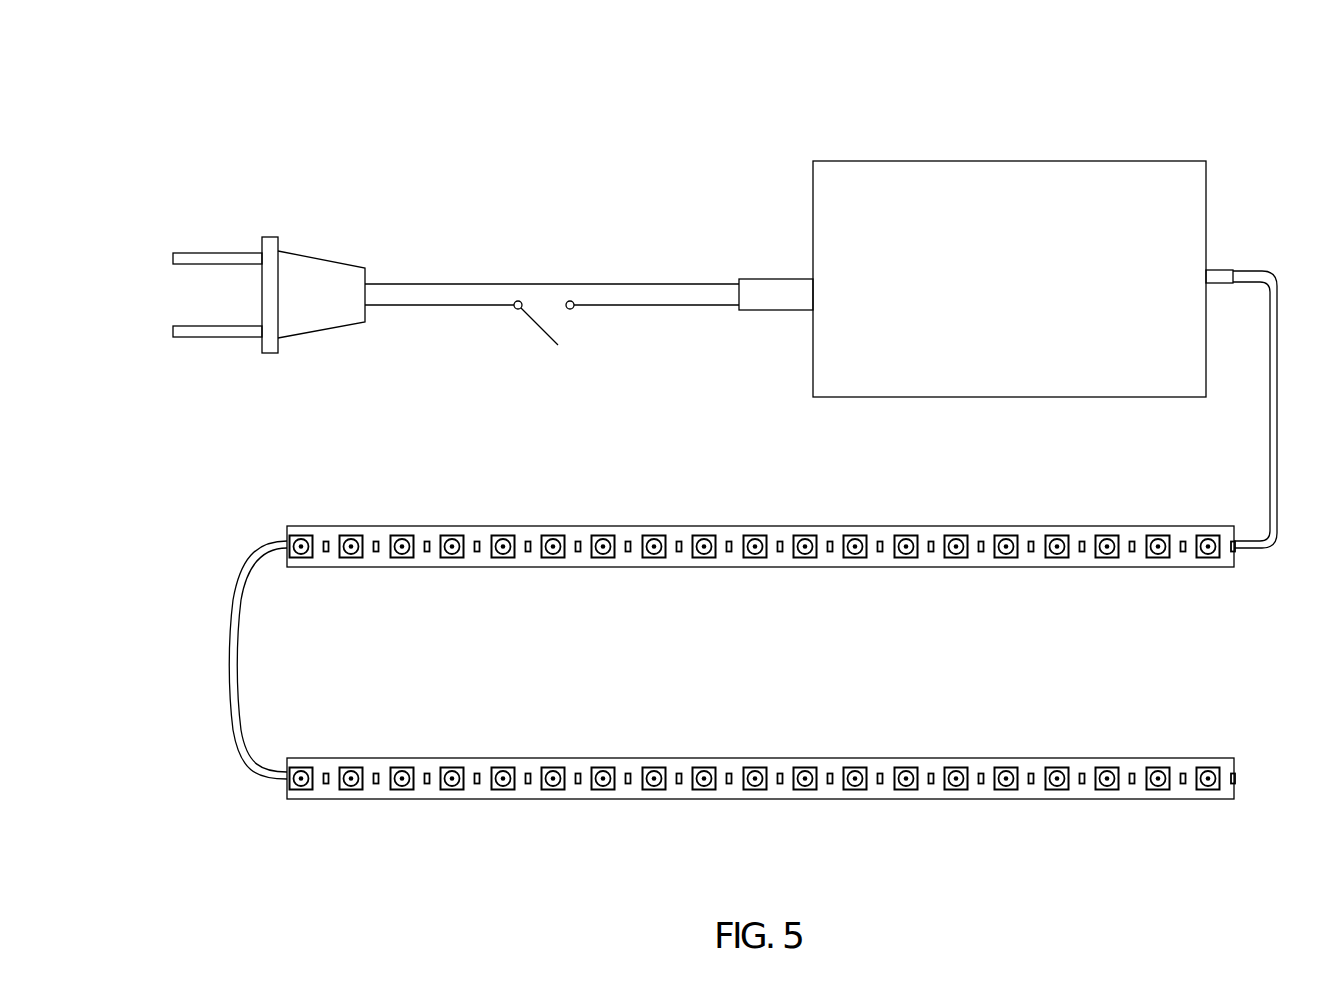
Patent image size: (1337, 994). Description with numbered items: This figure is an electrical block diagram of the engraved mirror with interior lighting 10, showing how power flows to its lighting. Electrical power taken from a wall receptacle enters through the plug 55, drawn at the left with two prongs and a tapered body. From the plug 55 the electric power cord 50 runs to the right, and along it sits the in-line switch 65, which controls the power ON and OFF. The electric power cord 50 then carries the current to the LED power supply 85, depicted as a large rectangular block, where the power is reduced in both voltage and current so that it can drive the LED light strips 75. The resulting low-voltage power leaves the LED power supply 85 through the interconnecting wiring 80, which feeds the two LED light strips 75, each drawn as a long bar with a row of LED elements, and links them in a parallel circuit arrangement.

The engraved mirror with interior lighting 10 is at (471, 193).
The plug 55 is at (309, 277).
The electric power cord 50 is at (683, 280).
The in-line switch 65 is at (546, 296).
The LED power supply 85 is at (996, 225).
The interconnecting wiring 80 is at (1278, 368).
The LED light strips 75 is at (688, 540).